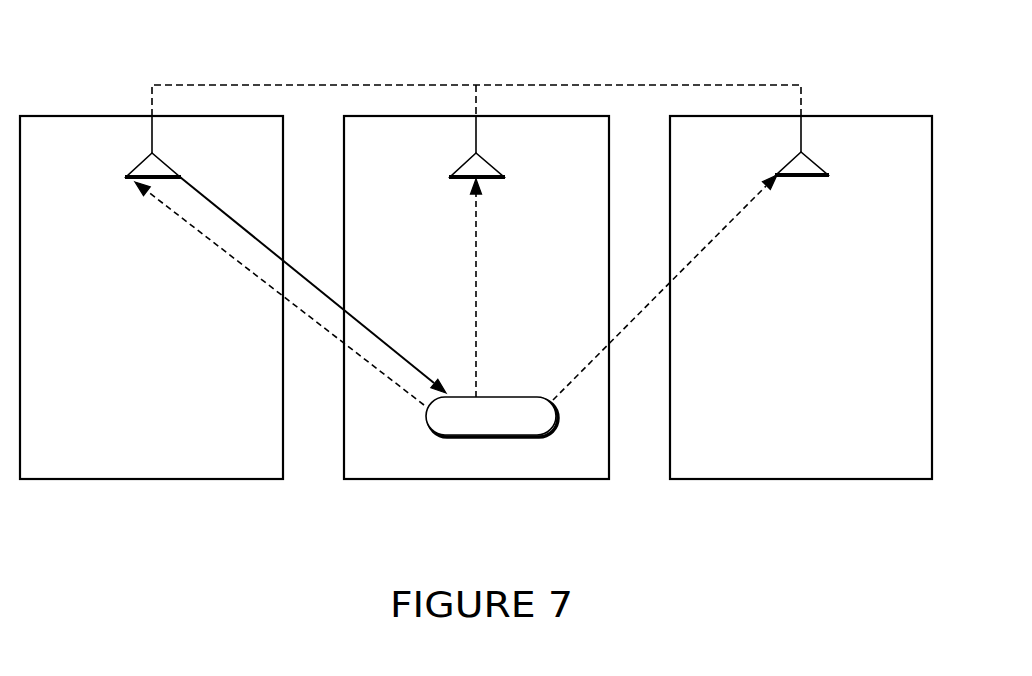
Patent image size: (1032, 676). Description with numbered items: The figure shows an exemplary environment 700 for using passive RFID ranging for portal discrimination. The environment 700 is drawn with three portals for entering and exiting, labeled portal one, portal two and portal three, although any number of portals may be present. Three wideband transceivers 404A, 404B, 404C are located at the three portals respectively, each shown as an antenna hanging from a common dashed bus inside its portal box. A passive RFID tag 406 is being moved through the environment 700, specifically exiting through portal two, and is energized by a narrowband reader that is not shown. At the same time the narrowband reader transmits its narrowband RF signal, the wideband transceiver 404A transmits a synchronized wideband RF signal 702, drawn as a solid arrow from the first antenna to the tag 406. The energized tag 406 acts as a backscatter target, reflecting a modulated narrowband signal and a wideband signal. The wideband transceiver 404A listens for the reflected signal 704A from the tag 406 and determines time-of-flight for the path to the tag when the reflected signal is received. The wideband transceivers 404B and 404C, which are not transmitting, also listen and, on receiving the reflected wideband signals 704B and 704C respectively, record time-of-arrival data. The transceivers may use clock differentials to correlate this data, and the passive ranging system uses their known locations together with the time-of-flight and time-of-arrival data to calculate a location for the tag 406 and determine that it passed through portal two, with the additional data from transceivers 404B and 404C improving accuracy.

The environment 700 is at (836, 56).
The wideband transceiver 404A is at (135, 167).
The wideband transceiver 404B is at (460, 167).
The wideband transceiver 404C is at (786, 165).
The passive RFID tag 406 is at (428, 431).
The synchronized wideband RF signal 702 is at (366, 328).
The reflected signal 704A is at (232, 263).
The reflected wideband signal 704B is at (476, 260).
The reflected wideband signal 704C is at (694, 259).